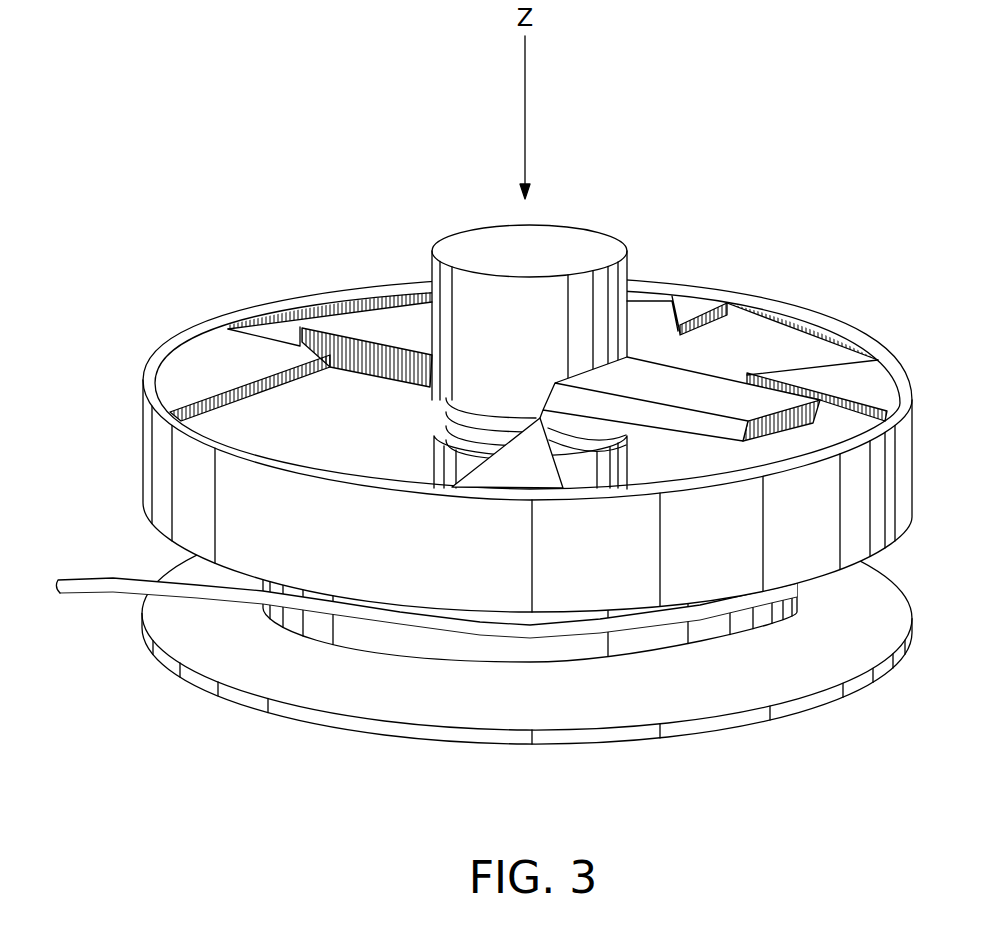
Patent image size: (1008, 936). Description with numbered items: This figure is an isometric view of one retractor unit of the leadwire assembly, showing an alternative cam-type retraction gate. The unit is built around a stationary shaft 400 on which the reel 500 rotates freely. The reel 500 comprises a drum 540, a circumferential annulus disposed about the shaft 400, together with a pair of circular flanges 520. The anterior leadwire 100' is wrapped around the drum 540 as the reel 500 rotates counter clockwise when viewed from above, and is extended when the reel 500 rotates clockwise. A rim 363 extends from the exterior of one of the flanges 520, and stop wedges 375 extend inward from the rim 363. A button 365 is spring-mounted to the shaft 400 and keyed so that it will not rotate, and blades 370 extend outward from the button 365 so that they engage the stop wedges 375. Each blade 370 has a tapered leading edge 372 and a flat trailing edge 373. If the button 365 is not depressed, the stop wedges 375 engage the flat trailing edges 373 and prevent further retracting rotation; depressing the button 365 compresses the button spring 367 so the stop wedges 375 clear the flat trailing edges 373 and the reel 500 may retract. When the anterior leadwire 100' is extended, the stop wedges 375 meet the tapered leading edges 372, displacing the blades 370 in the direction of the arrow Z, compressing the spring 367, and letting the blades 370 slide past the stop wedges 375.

The anterior leadwire 100' is at (420, 634).
The rim 363 is at (157, 447).
The button 365 is at (602, 242).
The button spring 367 is at (447, 418).
The blades 370 is at (728, 398).
The tapered leading edge 372 is at (413, 305).
The flat trailing edge 373 is at (315, 343).
The stop wedges 375 is at (828, 380).
The stationary shaft 400 is at (442, 467).
The reel 500 is at (724, 742).
The circular flanges 520 is at (163, 542).
The drum 540 is at (418, 650).